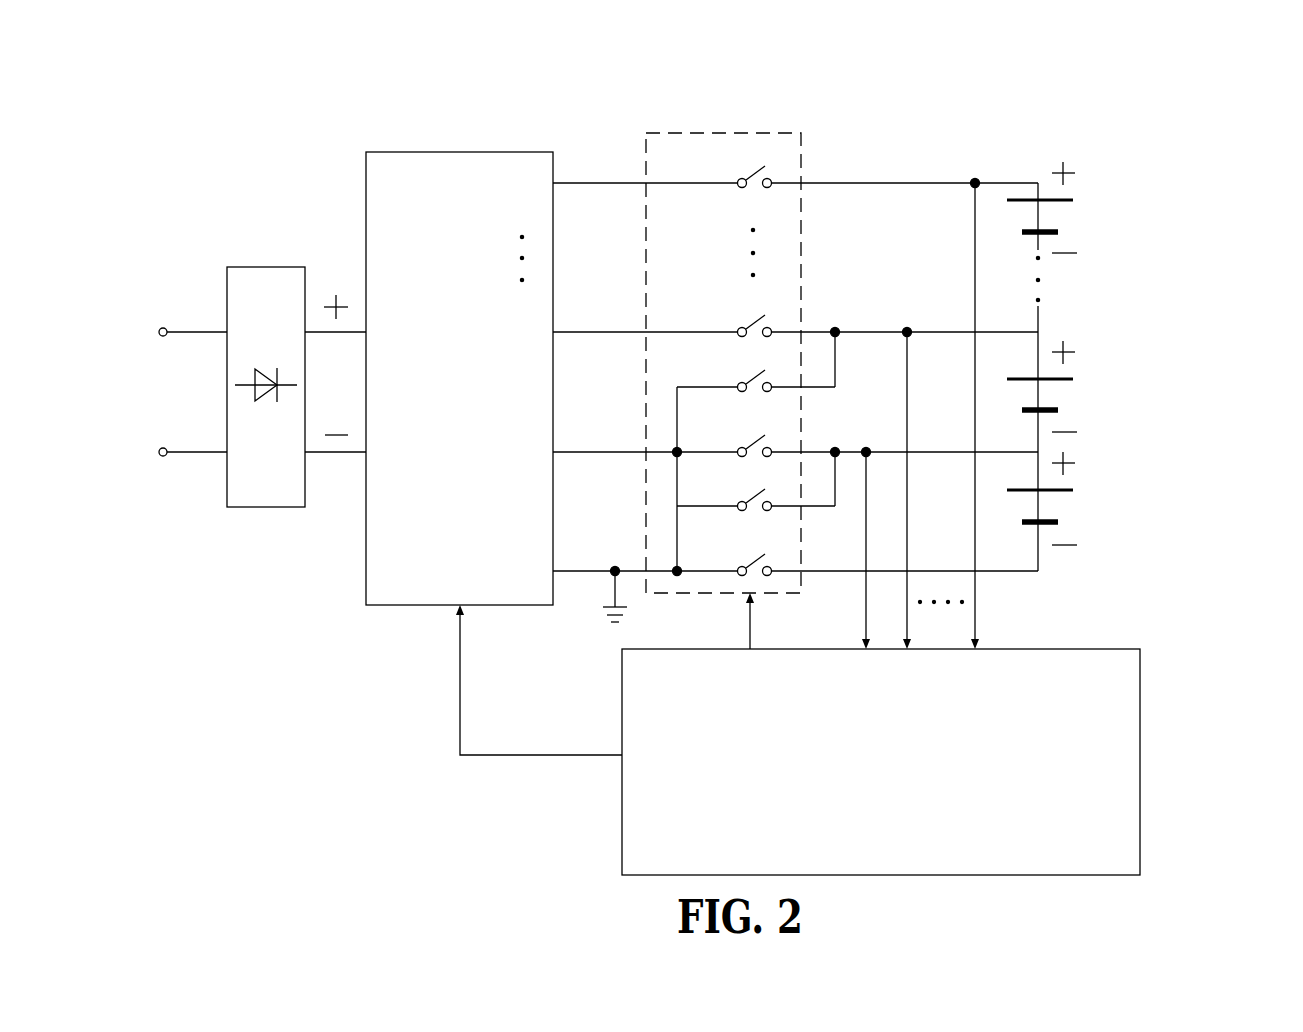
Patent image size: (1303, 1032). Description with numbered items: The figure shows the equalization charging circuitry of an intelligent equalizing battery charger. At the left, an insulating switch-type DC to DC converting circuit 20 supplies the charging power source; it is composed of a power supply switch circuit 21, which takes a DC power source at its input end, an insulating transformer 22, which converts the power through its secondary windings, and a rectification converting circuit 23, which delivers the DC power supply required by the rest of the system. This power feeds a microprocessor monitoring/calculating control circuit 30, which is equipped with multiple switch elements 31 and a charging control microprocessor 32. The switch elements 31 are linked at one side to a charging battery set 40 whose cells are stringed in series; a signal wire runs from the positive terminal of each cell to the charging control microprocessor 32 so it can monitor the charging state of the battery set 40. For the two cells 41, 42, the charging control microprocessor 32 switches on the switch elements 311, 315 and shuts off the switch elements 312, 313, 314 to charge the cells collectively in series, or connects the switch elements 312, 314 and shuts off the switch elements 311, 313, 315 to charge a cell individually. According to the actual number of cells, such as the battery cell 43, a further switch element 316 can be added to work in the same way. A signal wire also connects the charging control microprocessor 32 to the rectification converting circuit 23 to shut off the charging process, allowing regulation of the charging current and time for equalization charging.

The insulating switch-type DC to DC converting circuit 20 is at (267, 165).
The power supply switch circuit 21 is at (267, 268).
The insulating transformer 22 is at (463, 151).
The rectification converting circuit 23 is at (459, 378).
The microprocessor monitoring/calculating control circuit 30 is at (930, 139).
The switch elements 31 is at (740, 132).
The switch element 311 is at (747, 557).
The switch element 312 is at (747, 496).
The switch element 313 is at (747, 433).
The switch element 314 is at (747, 376).
The switch element 315 is at (747, 319).
The switch element 316 is at (746, 189).
The charging control microprocessor 32 is at (1140, 733).
The charging battery set 40 is at (1196, 266).
The cell 41 is at (1065, 515).
The cell 42 is at (1065, 395).
The battery cell 43 is at (1063, 220).